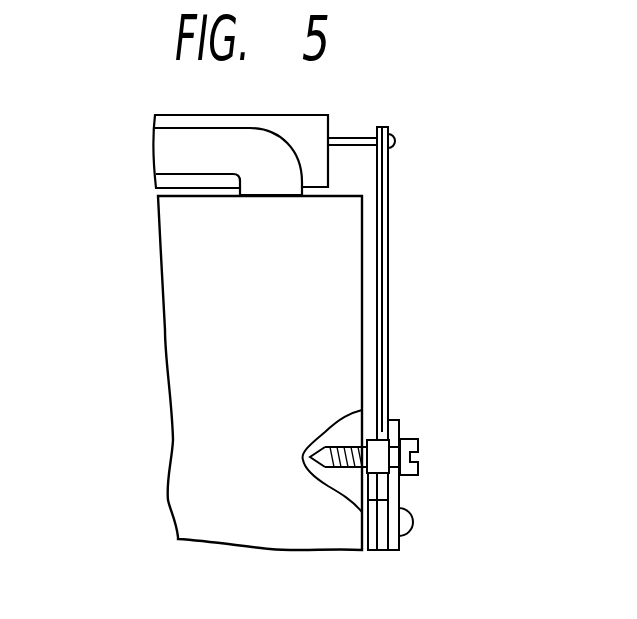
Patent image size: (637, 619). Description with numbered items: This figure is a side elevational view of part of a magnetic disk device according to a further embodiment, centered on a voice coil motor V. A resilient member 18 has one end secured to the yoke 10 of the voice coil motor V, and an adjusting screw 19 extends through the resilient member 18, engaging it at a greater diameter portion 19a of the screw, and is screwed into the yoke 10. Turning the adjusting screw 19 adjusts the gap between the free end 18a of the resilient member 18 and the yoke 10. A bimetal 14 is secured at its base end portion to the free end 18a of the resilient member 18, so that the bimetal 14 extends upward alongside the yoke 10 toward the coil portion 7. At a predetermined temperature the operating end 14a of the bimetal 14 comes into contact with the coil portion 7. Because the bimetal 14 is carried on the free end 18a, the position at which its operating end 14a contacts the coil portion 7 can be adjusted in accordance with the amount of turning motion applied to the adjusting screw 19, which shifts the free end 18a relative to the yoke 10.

The coil portion 7 is at (273, 148).
The operating end 14a is at (350, 137).
The bimetal 14 is at (388, 190).
The yoke 10 is at (180, 465).
The free end 18a is at (394, 420).
The resilient member 18 is at (395, 487).
The greater diameter portion 19a is at (402, 440).
The adjusting screw 19 is at (420, 458).
The voice coil motor V is at (160, 367).